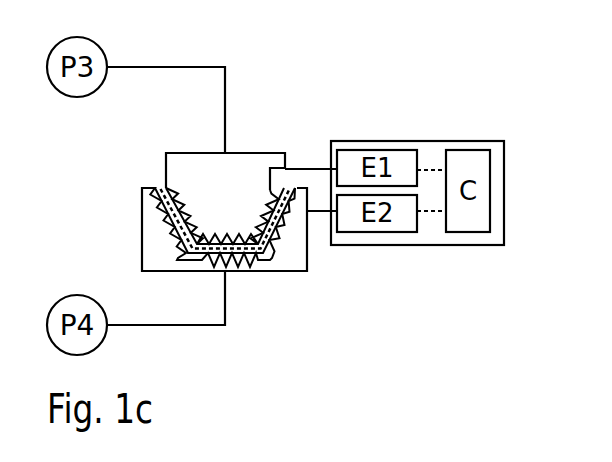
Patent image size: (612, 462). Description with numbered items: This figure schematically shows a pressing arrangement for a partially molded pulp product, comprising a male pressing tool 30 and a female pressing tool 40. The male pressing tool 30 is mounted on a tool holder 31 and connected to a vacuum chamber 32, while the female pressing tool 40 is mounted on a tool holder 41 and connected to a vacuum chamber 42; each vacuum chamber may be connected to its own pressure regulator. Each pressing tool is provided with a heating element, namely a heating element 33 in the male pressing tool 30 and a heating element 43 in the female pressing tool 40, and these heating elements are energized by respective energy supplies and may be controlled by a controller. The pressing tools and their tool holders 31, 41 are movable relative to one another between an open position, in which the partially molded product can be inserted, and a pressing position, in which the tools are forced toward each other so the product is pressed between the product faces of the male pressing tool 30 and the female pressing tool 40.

The male pressing tool 30 is at (165, 189).
The tool holder 31 is at (244, 153).
The vacuum chamber 32 is at (233, 190).
The heating element 33 is at (199, 168).
The female pressing tool 40 is at (150, 212).
The tool holder 41 is at (285, 272).
The vacuum chamber 42 is at (297, 254).
The heating element 43 is at (162, 241).